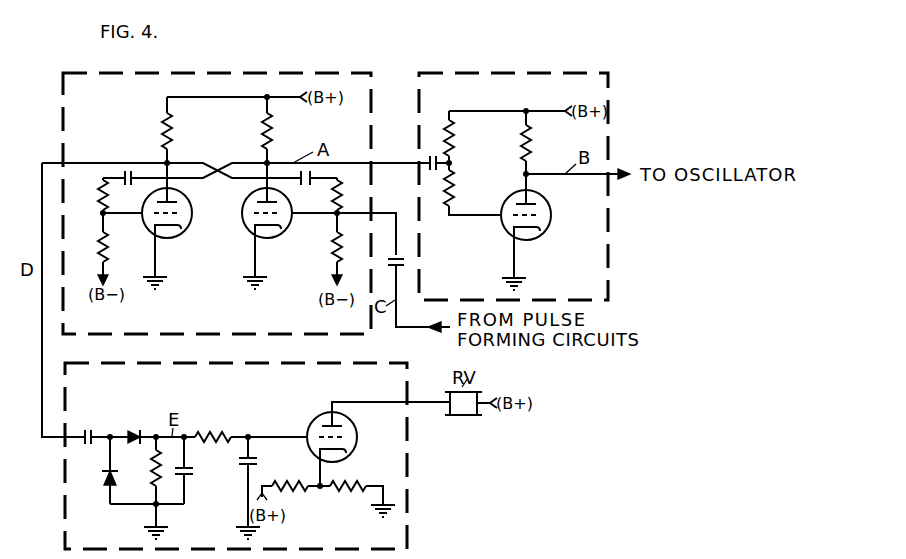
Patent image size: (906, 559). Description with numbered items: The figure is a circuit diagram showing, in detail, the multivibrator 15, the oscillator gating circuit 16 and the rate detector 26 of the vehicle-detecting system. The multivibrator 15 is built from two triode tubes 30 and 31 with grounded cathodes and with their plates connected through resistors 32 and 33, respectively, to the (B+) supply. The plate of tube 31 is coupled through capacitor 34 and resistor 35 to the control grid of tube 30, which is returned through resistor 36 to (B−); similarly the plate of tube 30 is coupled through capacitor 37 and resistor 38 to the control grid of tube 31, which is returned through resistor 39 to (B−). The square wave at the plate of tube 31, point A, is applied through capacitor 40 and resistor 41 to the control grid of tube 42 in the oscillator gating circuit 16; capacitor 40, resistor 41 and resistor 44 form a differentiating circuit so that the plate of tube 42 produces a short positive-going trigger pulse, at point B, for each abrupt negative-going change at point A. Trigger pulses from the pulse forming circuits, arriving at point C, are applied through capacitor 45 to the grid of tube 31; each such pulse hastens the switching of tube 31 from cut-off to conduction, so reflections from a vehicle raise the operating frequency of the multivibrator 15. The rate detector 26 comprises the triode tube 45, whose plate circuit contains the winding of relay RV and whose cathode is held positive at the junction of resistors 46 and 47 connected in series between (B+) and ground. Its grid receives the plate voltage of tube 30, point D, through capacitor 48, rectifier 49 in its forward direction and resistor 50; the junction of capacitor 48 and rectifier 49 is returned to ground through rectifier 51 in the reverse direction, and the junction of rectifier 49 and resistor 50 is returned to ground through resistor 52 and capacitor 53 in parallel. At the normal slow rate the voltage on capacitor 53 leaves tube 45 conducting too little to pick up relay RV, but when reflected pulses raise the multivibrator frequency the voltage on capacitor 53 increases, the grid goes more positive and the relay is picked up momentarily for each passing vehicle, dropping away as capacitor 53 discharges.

The multivibrator 15 is at (288, 73).
The oscillator gating circuit 16 is at (545, 73).
The rate detector 26 is at (265, 363).
The triode tube 30 is at (170, 240).
The triode tube 31 is at (243, 229).
The resistor 32 is at (172, 133).
The resistor 33 is at (272, 133).
The capacitor 34 is at (126, 172).
The resistor 35 is at (102, 192).
The resistor 36 is at (108, 250).
The capacitor 37 is at (307, 194).
The resistor 38 is at (349, 195).
The resistor 39 is at (333, 252).
The capacitor 40 is at (434, 157).
The resistor 41 is at (463, 185).
The tube 42 is at (549, 231).
The resistor 44 is at (463, 145).
The capacitor 45 is at (399, 255).
The resistor 46 is at (294, 494).
The resistor 47 is at (351, 493).
The capacitor 48 is at (101, 423).
The rectifier 49 is at (136, 432).
The resistor 50 is at (215, 423).
The rectifier 51 is at (104, 483).
The resistor 52 is at (152, 470).
The capacitor 53 is at (186, 475).